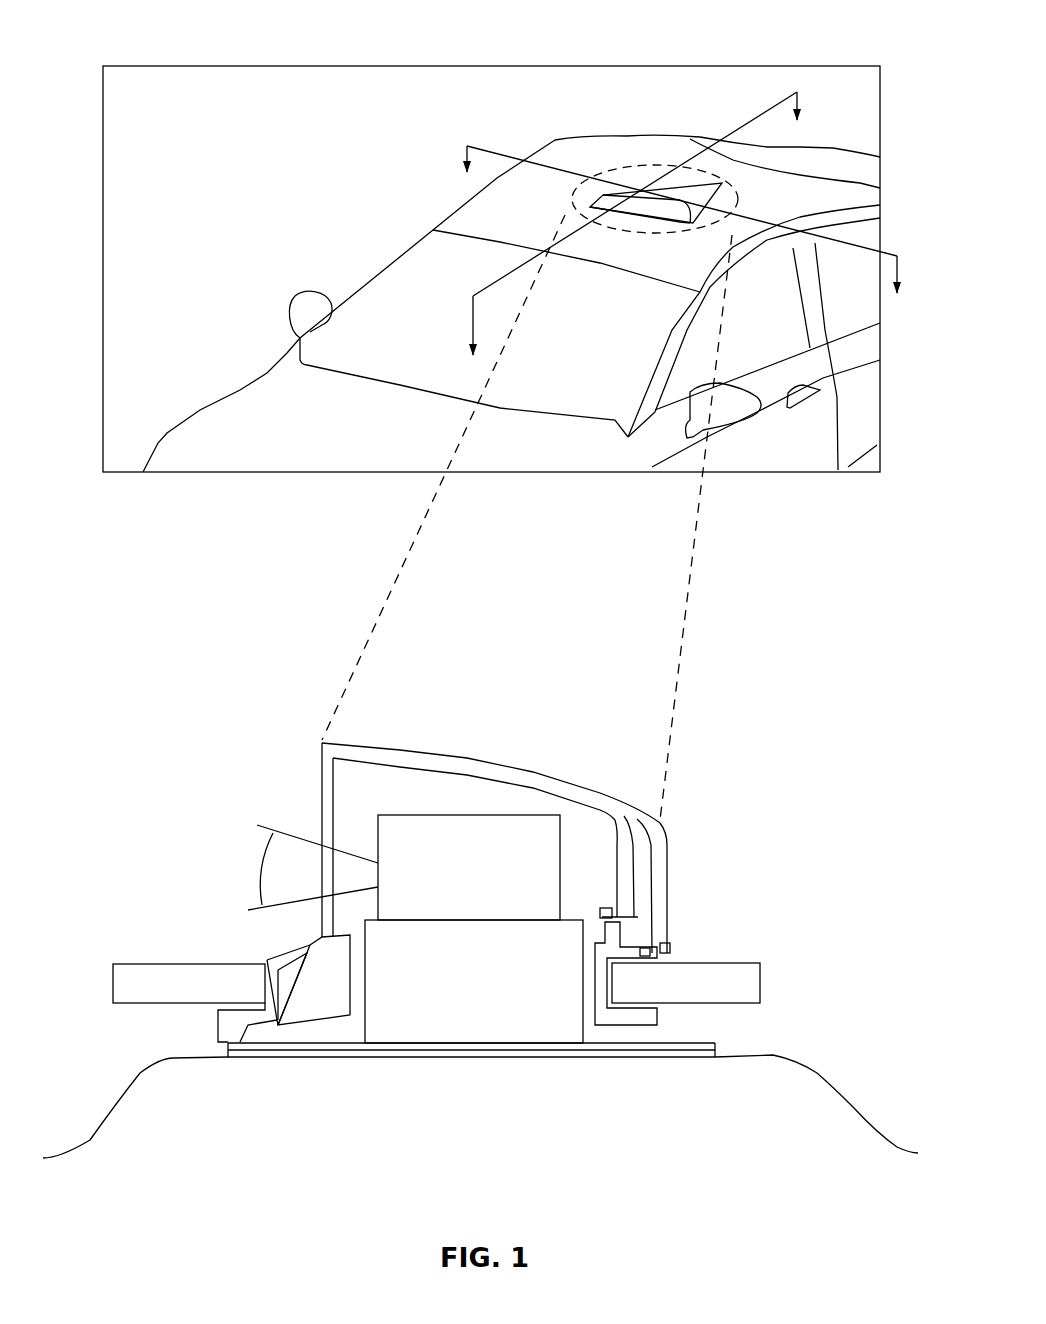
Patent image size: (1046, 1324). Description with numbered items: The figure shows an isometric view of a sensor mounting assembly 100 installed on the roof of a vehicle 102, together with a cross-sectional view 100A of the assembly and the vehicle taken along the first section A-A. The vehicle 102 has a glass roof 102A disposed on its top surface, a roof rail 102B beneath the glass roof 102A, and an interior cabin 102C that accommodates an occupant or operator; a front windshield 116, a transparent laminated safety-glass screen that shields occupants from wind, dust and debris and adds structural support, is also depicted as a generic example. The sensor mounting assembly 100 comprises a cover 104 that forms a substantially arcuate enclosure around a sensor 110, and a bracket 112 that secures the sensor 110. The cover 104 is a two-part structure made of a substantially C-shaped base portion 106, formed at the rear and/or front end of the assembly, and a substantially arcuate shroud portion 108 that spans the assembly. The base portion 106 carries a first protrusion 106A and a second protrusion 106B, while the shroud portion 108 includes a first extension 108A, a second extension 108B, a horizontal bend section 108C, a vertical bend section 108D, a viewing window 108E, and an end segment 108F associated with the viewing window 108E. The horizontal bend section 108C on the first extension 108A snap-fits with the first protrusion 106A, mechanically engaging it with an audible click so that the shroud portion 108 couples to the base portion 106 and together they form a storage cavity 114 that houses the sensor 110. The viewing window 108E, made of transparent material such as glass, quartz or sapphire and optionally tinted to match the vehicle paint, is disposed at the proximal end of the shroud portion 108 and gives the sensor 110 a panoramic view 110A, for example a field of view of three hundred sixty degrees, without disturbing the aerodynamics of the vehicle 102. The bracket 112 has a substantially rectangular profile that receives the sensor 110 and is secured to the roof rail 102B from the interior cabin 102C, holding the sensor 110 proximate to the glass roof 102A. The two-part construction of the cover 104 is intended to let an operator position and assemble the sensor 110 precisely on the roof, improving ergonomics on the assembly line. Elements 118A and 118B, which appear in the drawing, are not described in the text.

The sensor mounting assembly 100 is at (625, 168).
The cross-sectional view 100A is at (103, 650).
The vehicle 102 is at (160, 443).
The glass roof 102A is at (737, 958).
The roof rail 102B is at (637, 1053).
The interior cabin 102C is at (125, 1112).
The cover 104 is at (448, 735).
The base portion 106 is at (612, 1028).
The first protrusion 106A is at (610, 897).
The second protrusion 106B is at (641, 952).
The shroud portion 108 is at (524, 899).
The first extension 108A is at (623, 833).
The second extension 108B is at (655, 917).
The horizontal bend section 108C is at (628, 903).
The vertical bend section 108D is at (672, 953).
The viewing window 108E is at (328, 808).
The end segment 108F is at (313, 1010).
The sensor 110 is at (508, 812).
The panoramic view 110A is at (238, 870).
The bracket 112 is at (487, 1002).
The storage cavity 114 is at (393, 793).
The front windshield 116 is at (158, 983).
The base plate upper layer 118A is at (235, 1055).
The base plate lower layer 118B is at (462, 1055).